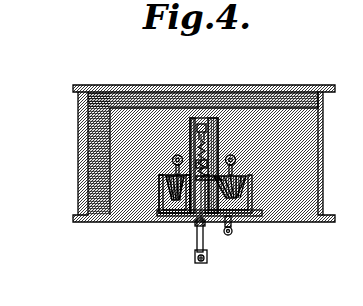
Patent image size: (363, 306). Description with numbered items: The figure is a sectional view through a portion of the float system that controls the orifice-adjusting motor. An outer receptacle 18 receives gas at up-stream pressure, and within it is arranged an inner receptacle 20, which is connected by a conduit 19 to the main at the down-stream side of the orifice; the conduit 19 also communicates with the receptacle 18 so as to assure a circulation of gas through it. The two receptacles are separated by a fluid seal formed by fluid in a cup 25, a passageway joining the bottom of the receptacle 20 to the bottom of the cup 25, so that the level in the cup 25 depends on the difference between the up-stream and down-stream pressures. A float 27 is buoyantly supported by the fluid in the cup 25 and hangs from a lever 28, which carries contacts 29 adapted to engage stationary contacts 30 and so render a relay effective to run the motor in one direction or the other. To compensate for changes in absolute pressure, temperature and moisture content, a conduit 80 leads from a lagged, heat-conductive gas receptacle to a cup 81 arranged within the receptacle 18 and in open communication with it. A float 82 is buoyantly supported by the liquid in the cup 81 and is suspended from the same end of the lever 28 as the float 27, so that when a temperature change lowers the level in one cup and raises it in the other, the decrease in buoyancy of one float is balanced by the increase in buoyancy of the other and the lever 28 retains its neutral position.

The receptacle 18 is at (289, 88).
The conduit 19 is at (201, 260).
The receptacle 20 is at (218, 128).
The cup 25 is at (162, 198).
The float 27 is at (168, 186).
The lever 28 is at (217, 157).
The contacts 29 is at (200, 163).
The stationary contacts 30 is at (200, 143).
The conduit 80 is at (233, 230).
The cup 81 is at (252, 200).
The float 82 is at (235, 178).